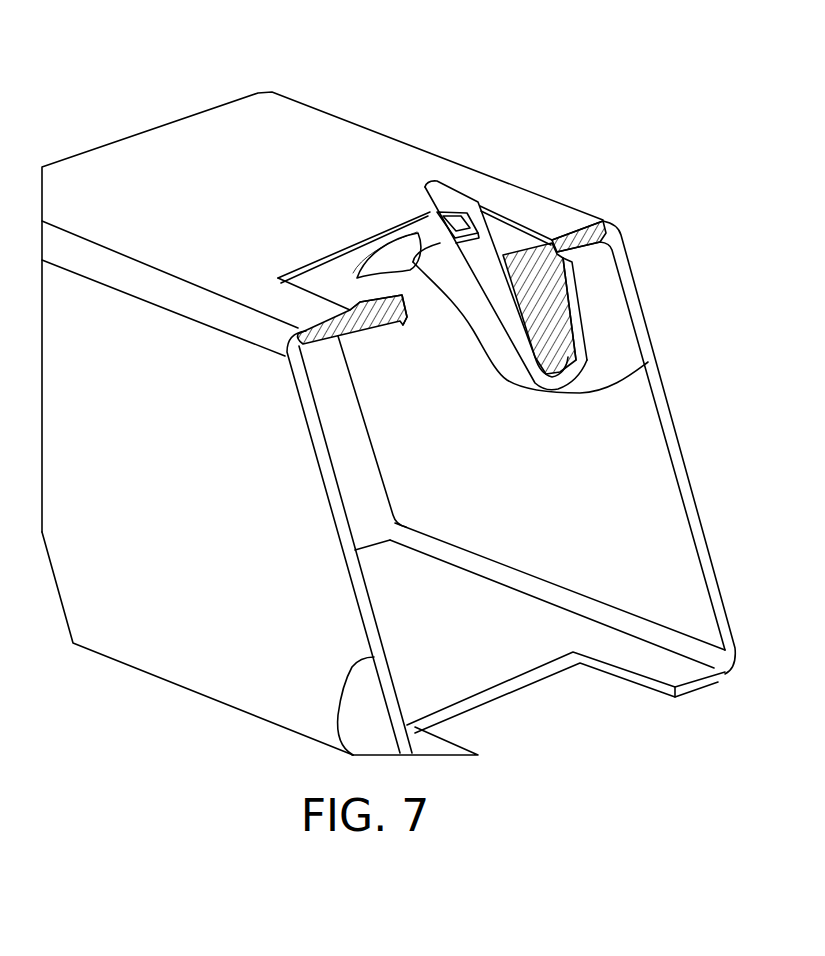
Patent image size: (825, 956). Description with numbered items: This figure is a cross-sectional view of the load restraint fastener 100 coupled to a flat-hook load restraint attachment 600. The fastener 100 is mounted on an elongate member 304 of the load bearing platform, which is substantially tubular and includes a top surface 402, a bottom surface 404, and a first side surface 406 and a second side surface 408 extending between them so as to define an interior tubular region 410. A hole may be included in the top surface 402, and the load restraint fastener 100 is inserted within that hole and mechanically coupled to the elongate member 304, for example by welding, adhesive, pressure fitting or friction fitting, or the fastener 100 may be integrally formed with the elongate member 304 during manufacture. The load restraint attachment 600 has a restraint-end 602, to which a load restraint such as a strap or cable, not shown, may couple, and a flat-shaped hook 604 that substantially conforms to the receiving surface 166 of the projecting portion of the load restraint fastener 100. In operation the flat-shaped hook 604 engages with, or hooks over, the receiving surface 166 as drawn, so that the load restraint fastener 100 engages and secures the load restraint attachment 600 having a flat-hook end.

The load restraint fastener 100 is at (342, 268).
The receiving surface 166 is at (568, 300).
The elongate member 304 is at (187, 693).
The top surface 402 is at (278, 110).
The bottom surface 404 is at (707, 687).
The first side surface 406 is at (325, 737).
The second side surface 408 is at (697, 507).
The interior tubular region 410 is at (450, 628).
The load restraint attachment 600 is at (588, 242).
The restraint-end 602 is at (450, 210).
The flat-shaped hook 604 is at (632, 375).